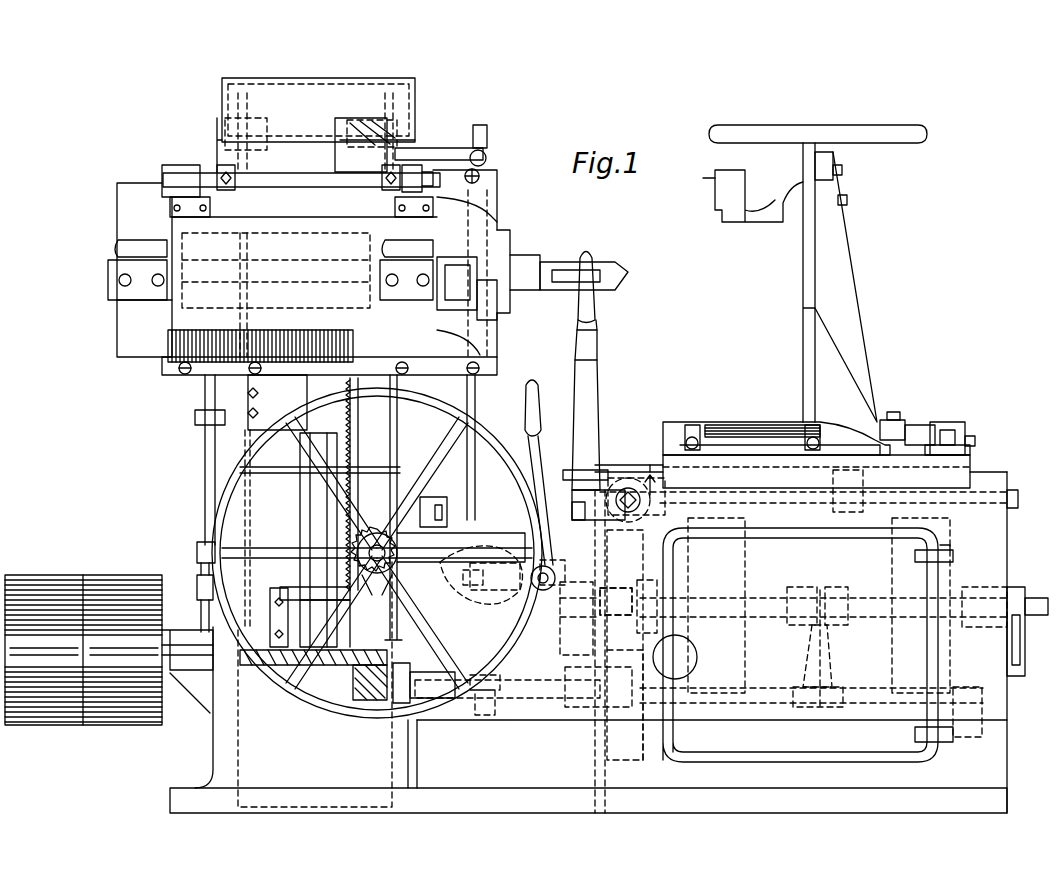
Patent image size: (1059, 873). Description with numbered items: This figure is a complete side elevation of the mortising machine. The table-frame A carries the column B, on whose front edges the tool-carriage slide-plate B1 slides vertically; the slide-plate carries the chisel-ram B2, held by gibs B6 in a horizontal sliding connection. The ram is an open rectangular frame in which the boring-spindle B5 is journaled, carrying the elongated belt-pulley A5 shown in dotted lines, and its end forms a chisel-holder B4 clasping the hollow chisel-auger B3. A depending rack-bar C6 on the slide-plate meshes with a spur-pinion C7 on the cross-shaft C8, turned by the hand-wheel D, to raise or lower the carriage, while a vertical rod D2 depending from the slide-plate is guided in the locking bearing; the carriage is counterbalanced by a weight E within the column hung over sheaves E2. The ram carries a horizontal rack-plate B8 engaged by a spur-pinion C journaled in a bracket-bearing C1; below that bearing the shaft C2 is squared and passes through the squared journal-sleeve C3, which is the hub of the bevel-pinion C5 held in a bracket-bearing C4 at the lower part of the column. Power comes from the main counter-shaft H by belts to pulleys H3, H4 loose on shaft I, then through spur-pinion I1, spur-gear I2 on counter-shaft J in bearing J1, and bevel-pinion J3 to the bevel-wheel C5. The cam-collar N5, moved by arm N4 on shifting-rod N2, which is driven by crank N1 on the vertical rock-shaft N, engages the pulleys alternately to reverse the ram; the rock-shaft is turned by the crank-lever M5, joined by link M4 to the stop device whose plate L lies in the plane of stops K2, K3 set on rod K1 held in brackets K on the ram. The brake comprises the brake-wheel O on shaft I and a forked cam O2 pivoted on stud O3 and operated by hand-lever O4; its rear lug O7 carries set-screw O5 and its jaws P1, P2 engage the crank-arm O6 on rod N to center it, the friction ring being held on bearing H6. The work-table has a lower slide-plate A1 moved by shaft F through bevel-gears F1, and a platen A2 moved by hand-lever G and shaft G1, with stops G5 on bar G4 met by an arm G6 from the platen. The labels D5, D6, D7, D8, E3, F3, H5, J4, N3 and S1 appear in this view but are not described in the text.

The table-frame A is at (712, 642).
The lower slide-plate A1 is at (712, 460).
The platen A2 is at (675, 425).
The belt-pulley A5 is at (276, 295).
The column B is at (305, 100).
The slide-plate B1 is at (497, 208).
The chisel-ram B2 is at (190, 230).
The hollow chisel-auger B3 is at (532, 271).
The chisel-holder B4 is at (510, 310).
The boring-spindle B5 is at (108, 272).
The gibs B6 is at (162, 178).
The rack-plate B8 is at (170, 348).
The spur-pinion C is at (312, 335).
The bracket-bearing C1 is at (277, 402).
The shaft C2 is at (300, 492).
The journal-sleeve C3 is at (290, 587).
The bracket-bearing C4 is at (270, 600).
The bevel-pinion C5 is at (245, 657).
The rack-bar C6 is at (358, 440).
The spur-pinion C7 is at (400, 568).
The cross-shaft C8 is at (377, 592).
The hand-wheel D is at (430, 467).
The vertical rod D2 is at (395, 605).
The rod D5 is at (205, 450).
The collar D6 is at (195, 416).
The pulley D7 is at (197, 583).
The collar D8 is at (197, 552).
The counterbalance weight E is at (345, 806).
The sheaves E2 is at (250, 103).
The cross head E3 is at (280, 130).
The projecting shaft F is at (638, 505).
The bevel-gear connection F1 is at (630, 488).
The feed screw F3 is at (750, 500).
The hand-lever G is at (590, 398).
The shaft G1 is at (572, 478).
The rod G4 is at (972, 448).
The adjusting stops G5 is at (965, 430).
The arm G6 is at (910, 425).
The main-feed counter-shaft H is at (1025, 650).
The belt-pulley H3 is at (800, 443).
The belt-pulley H4 is at (922, 605).
The bearing H5 is at (1015, 595).
The bearing H6 is at (612, 598).
The shaft I is at (823, 608).
The spur-pinion I1 is at (662, 592).
The spur-gear I2 is at (648, 752).
The counter-shaft J is at (500, 685).
The bearing J1 is at (410, 675).
The bevel-pinion J3 is at (368, 700).
The bearing J4 is at (600, 645).
The brackets K is at (301, 207).
The rod K1 is at (288, 178).
The stop K2 is at (218, 170).
The stop K3 is at (430, 179).
The plate L is at (345, 154).
The link M4 is at (455, 148).
The crank-lever M5 is at (488, 155).
The rock-shaft N is at (478, 388).
The crank N1 is at (485, 712).
The shifting-rod N2 is at (765, 696).
The bearing N3 is at (965, 732).
The arm N4 is at (830, 676).
The cam-collar N5 is at (803, 595).
The brake-wheel O is at (596, 618).
The forked cam O2 is at (481, 575).
The stud O3 is at (556, 574).
The hand-lever O4 is at (535, 450).
The set-screw O5 is at (557, 560).
The crank-arm O6 is at (475, 582).
The rear projecting lug O7 is at (575, 645).
The engaging surface P1 is at (461, 547).
The engaging surface P2 is at (512, 562).
The screw S1 is at (580, 512).